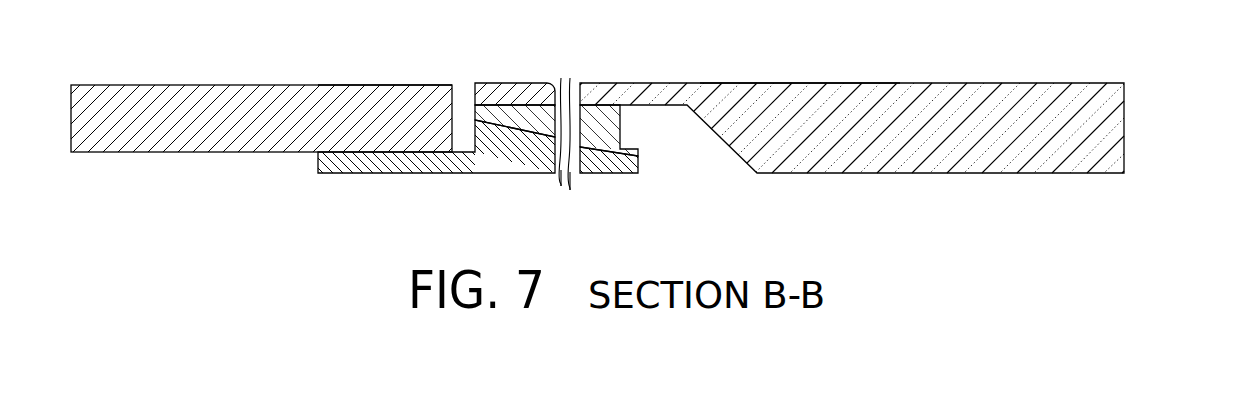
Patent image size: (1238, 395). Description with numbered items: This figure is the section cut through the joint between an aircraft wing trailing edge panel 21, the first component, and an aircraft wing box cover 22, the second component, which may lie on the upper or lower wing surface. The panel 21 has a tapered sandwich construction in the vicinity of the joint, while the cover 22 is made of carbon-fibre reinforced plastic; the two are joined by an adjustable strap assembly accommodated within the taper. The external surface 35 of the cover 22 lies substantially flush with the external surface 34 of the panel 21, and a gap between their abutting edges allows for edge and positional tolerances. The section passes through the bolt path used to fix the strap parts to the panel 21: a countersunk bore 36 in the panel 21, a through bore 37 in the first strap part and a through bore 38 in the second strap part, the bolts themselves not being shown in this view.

The aircraft wing trailing edge panel 21 is at (873, 100).
The aircraft wing box cover 22 is at (267, 100).
The external surface of the panel 34 is at (797, 78).
The external surface of the cover 35 is at (345, 80).
The countersunk bore 36 is at (560, 92).
The through bore 37 is at (577, 93).
The through bore 38 is at (572, 178).